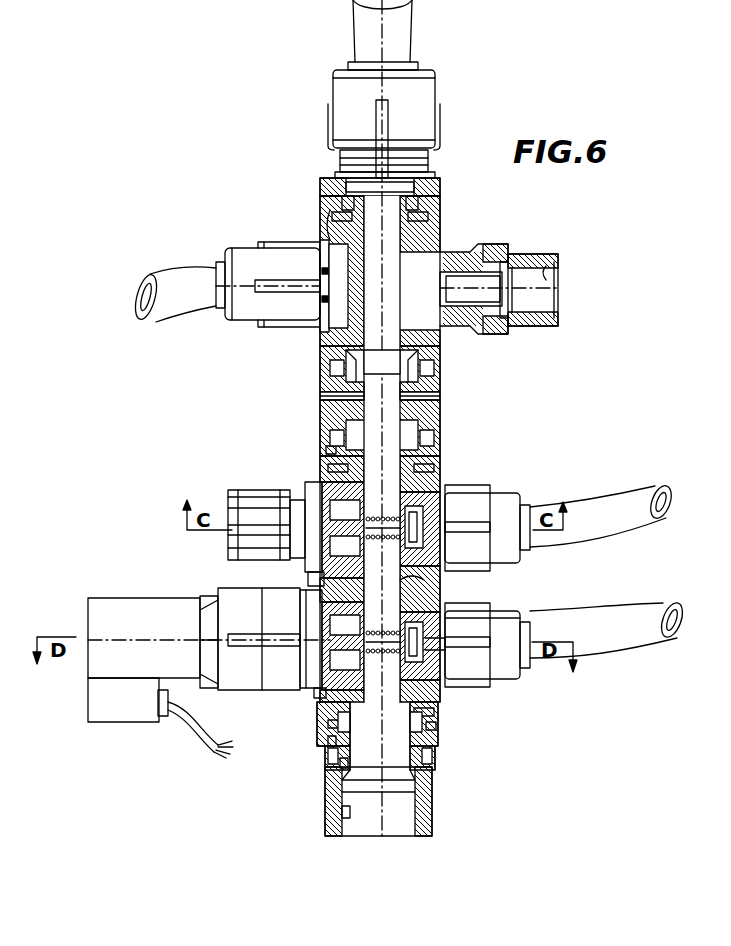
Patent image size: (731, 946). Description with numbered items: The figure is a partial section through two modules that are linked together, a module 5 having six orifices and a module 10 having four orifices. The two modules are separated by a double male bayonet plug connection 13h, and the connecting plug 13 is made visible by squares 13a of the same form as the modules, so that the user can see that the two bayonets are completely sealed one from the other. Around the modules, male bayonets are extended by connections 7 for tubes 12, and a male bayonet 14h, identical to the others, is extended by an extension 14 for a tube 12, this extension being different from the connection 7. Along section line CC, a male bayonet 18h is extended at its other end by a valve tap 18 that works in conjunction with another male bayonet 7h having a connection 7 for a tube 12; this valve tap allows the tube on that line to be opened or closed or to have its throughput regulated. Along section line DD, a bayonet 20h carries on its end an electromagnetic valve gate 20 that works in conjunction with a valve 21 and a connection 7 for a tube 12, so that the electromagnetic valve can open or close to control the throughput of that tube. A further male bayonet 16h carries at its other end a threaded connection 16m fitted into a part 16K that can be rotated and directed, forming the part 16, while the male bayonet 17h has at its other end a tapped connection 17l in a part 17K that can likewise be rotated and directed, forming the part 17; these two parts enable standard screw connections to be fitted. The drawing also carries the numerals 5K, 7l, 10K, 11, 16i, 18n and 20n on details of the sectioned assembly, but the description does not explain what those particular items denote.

The module 5 is at (440, 742).
The seal ring 5K is at (326, 466).
The connection 7 is at (440, 94).
The male bayonet 7h is at (436, 582).
The fitting passage 7l is at (444, 656).
The module 10 is at (440, 187).
The cover ring 10K is at (437, 214).
The sealing ring 11 is at (445, 238).
The tube 12 is at (412, 46).
The plug 13 is at (320, 394).
The squares 13a is at (471, 400).
The double male bayonet plug connection 13h is at (446, 372).
The extension 14 is at (242, 250).
The male bayonet 14h is at (294, 258).
The part 16 is at (440, 762).
The male bayonet 16h is at (326, 740).
The sleeve groove 16i is at (340, 762).
The part 16K is at (440, 813).
The threaded connection 16m is at (342, 812).
The part 17 is at (504, 336).
The male bayonet 17h is at (448, 335).
The part 17K is at (516, 254).
The tapped connection 17l is at (548, 272).
The valve tap 18 is at (248, 514).
The male bayonet 18h is at (312, 482).
The coil nut 18n is at (308, 576).
The electromagnetic valve gate 20 is at (171, 612).
The bayonet 20h is at (318, 706).
The solenoid nut 20n is at (304, 690).
The valve 21 is at (488, 614).